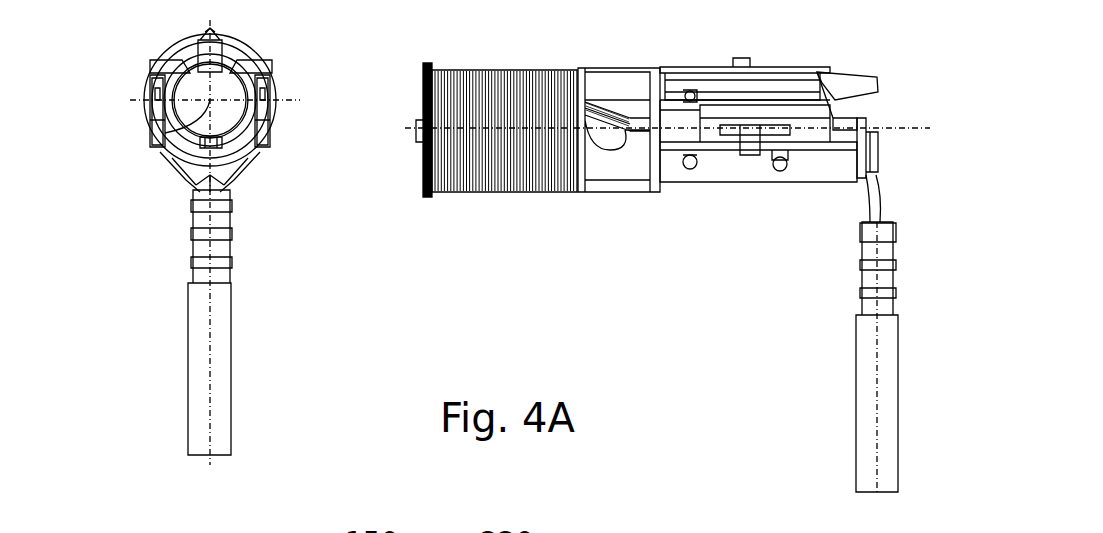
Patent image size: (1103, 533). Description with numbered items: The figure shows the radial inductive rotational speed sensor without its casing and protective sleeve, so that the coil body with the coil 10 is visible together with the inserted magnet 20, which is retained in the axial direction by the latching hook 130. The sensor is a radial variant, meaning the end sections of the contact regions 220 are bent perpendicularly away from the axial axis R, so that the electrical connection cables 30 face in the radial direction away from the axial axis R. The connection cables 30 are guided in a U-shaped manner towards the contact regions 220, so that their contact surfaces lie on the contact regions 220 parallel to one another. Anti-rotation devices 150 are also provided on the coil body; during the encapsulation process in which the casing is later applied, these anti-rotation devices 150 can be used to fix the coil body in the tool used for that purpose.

The coil 10 is at (467, 183).
The magnet 20 is at (812, 95).
The connection cable 30 is at (222, 320).
The latching hook 130 is at (862, 82).
The anti-rotation device 150 is at (692, 92).
The contact region 220 is at (147, 96).
The axial axis R is at (156, 133).